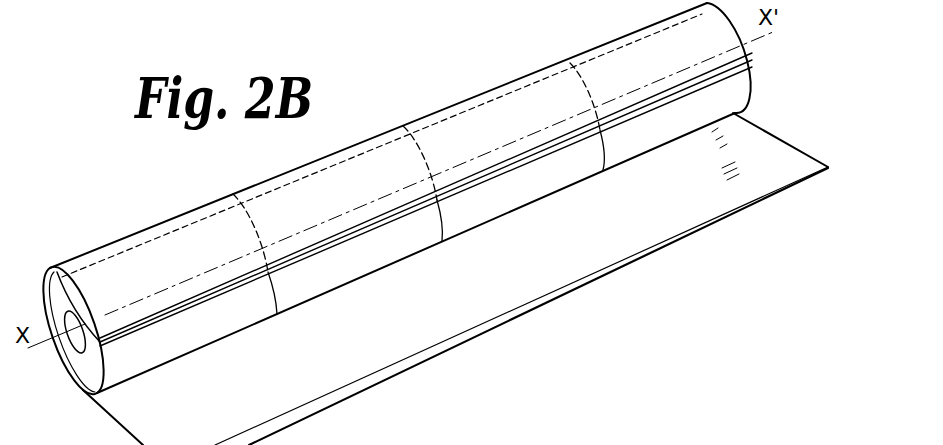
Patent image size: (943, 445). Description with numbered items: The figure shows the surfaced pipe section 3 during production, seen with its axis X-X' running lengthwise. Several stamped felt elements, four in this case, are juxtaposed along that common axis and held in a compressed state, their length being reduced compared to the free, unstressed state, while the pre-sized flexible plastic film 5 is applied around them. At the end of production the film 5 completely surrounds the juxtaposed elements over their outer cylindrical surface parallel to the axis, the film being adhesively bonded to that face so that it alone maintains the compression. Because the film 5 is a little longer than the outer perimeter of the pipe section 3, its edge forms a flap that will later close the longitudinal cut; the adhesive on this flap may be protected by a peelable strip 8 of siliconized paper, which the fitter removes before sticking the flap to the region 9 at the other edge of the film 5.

The pipe section 3 is at (391, 202).
The flexible plastic film 5 is at (757, 153).
The peelable strip 8 is at (537, 294).
The region 9 is at (508, 152).